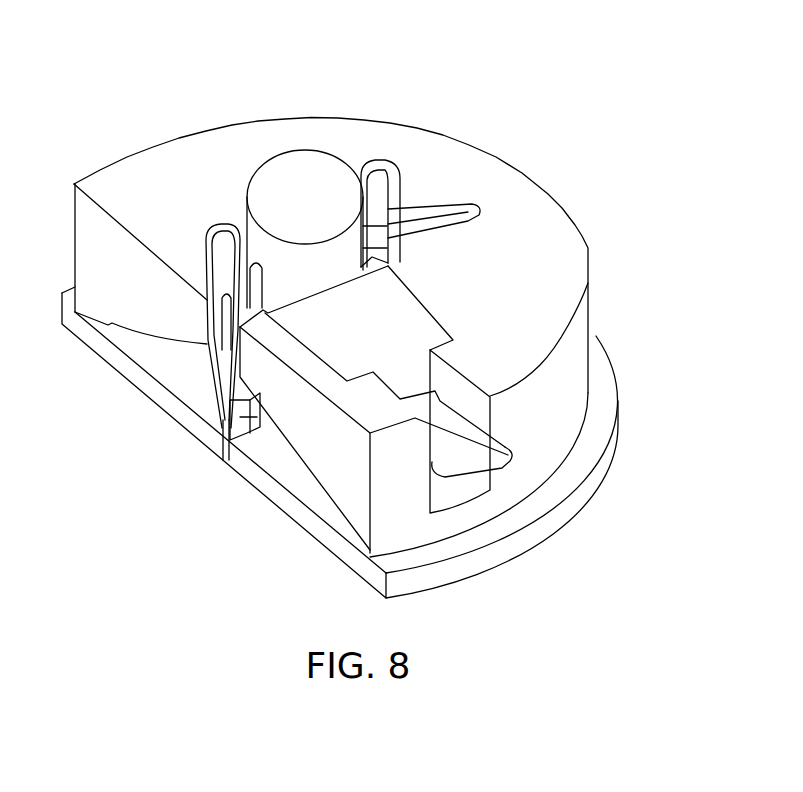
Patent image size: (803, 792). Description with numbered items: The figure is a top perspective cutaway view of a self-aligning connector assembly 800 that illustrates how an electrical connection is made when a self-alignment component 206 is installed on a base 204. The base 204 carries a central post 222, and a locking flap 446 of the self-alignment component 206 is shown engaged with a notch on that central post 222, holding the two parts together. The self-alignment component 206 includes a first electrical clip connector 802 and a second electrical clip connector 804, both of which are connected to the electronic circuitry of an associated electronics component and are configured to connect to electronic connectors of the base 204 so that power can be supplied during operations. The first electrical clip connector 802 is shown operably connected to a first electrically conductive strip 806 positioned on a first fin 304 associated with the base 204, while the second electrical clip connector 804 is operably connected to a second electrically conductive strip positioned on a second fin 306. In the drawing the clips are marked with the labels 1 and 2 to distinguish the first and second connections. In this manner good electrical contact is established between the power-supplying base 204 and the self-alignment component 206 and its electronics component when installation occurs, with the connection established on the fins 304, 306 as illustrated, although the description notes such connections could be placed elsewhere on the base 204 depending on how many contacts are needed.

The self-aligning connector assembly 800 is at (606, 56).
The first electrical clip connector 802 is at (226, 226).
The second electrical clip connector 804 is at (388, 183).
The first electrically conductive strip 806 is at (239, 421).
The central post 222 is at (327, 257).
The second fin 306 is at (424, 227).
The locking flap 446 is at (373, 310).
The self-alignment component 206 is at (573, 360).
The base 204 is at (487, 553).
The first fin 304 is at (221, 416).
The first position 1 is at (206, 351).
The second position 2 is at (419, 181).